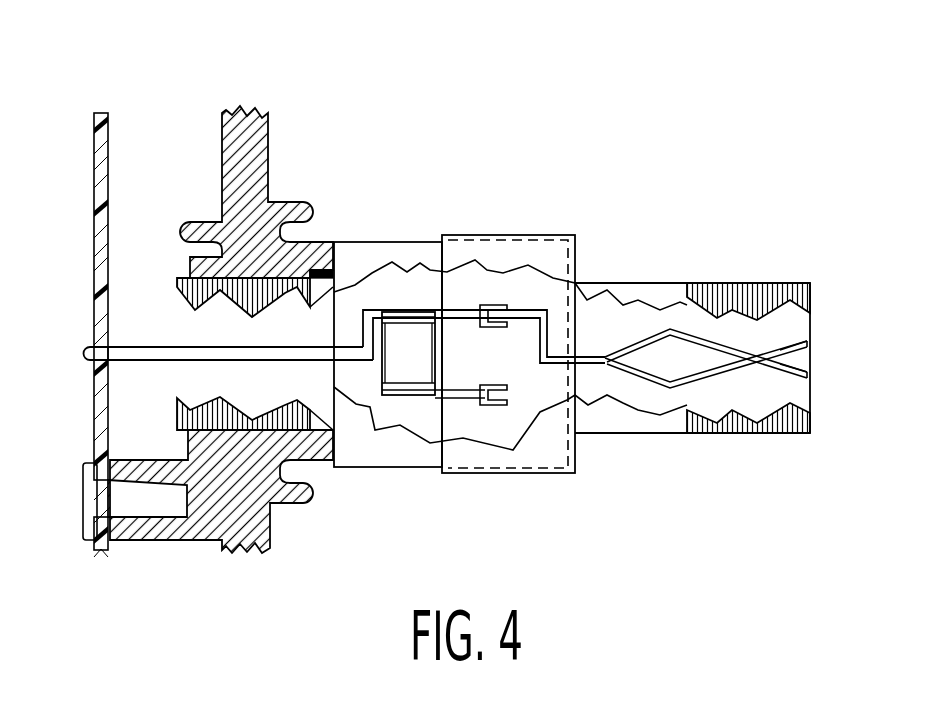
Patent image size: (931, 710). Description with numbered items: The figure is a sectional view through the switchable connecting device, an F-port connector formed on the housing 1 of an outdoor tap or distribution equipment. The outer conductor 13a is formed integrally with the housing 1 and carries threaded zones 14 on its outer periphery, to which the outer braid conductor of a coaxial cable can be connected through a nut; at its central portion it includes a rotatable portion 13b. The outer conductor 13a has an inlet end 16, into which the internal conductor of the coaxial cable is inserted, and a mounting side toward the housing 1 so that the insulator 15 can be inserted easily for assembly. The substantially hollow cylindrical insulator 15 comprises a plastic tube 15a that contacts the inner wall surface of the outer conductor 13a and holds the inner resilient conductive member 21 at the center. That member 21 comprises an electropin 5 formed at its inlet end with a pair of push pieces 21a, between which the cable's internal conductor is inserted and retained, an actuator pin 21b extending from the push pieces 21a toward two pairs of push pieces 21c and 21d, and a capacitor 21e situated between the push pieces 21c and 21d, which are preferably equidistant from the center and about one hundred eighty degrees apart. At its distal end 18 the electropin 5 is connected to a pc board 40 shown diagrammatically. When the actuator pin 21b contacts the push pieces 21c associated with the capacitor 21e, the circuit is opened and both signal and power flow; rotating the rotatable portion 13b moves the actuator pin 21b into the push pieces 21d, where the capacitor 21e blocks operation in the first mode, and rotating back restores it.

The housing 1 is at (253, 110).
The electropin 5 is at (97, 357).
The outer conductor 13a is at (713, 290).
The rotatable portion 13b is at (487, 253).
The threaded zones 14 is at (722, 437).
The insulator 15 is at (622, 290).
The plastic tube 15a is at (812, 350).
The inlet end 16 is at (793, 318).
The distal end 18 is at (118, 343).
The inner resilient conductive member 21 is at (631, 389).
The push pieces 21a is at (808, 333).
The actuator pin 21b is at (537, 348).
The push pieces 21c is at (483, 302).
The push pieces 21d is at (460, 400).
The capacitor 21e is at (427, 335).
The pc board 40 is at (98, 163).